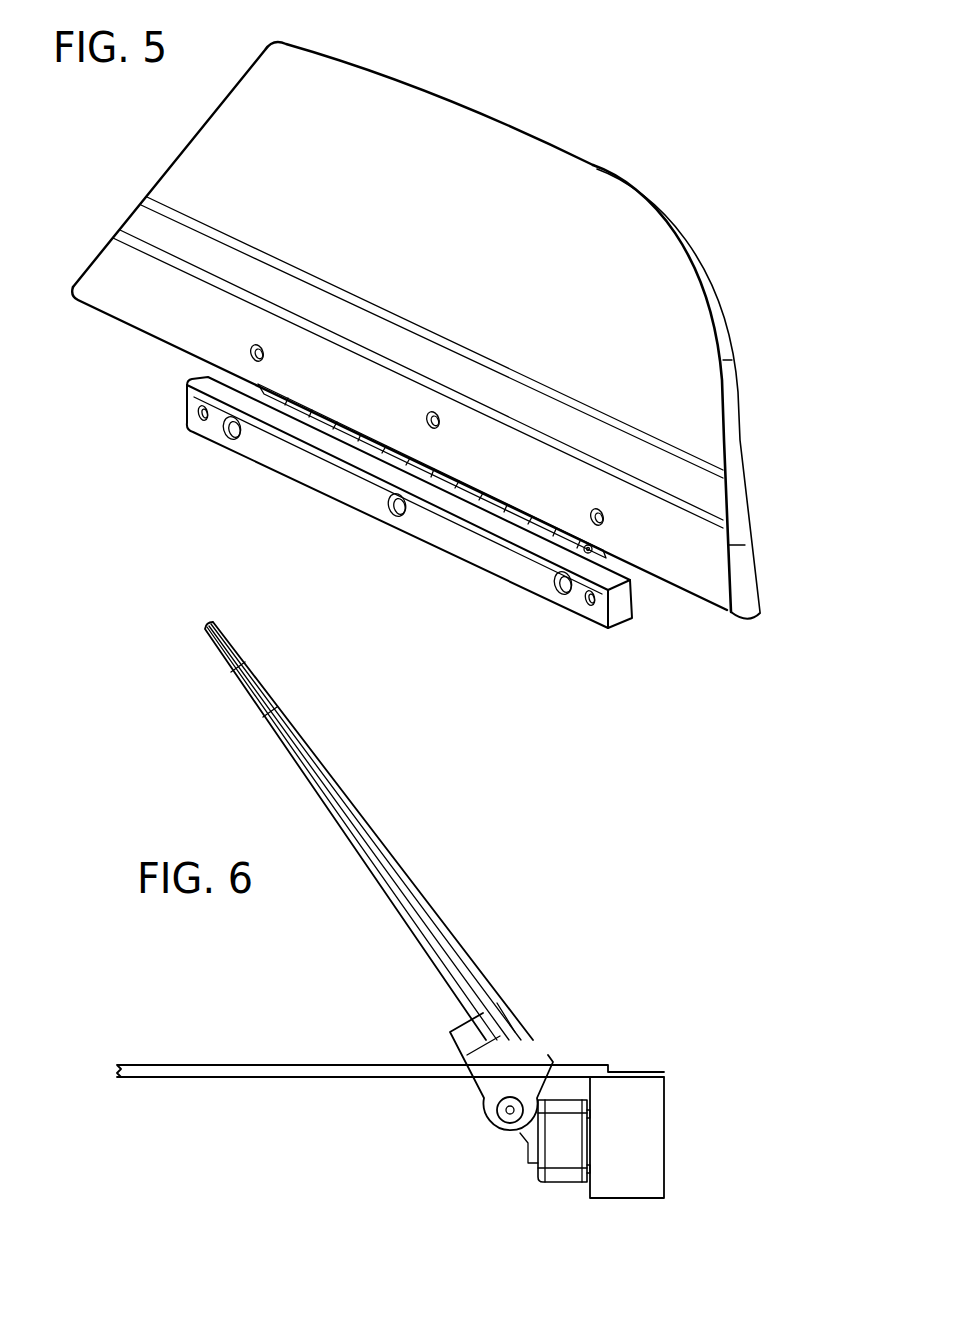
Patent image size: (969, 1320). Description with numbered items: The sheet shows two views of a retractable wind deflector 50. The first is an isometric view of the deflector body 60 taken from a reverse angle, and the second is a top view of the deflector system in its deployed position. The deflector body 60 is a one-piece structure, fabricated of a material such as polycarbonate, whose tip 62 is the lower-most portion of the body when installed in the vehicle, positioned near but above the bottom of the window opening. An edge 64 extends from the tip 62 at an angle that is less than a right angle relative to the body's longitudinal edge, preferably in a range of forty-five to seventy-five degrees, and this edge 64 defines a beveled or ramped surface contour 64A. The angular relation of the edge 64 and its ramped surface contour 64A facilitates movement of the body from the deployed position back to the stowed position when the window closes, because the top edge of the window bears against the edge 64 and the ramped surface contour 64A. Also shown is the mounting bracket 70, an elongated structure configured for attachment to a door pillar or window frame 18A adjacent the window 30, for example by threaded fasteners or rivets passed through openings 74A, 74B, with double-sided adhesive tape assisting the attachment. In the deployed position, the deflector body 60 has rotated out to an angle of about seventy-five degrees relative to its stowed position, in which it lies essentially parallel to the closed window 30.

In FIG. 5, the tip 62 is at (755, 625).
In FIG. 5, the edge 64 is at (750, 498).
In FIG. 5, the ramped surface contour 64A is at (735, 565).
In FIG. 5, the opening 74A is at (187, 414).
In FIG. 5, the opening 74B is at (583, 602).
In FIG. 6, the deflector body 60 is at (228, 668).
In FIG. 6, the window 30 is at (138, 1067).
In FIG. 6, the retractable wind deflector 50 is at (486, 1141).
In FIG. 6, the mounting bracket 70 is at (557, 1188).
In FIG. 6, the door pillar or window frame 18A is at (638, 1137).